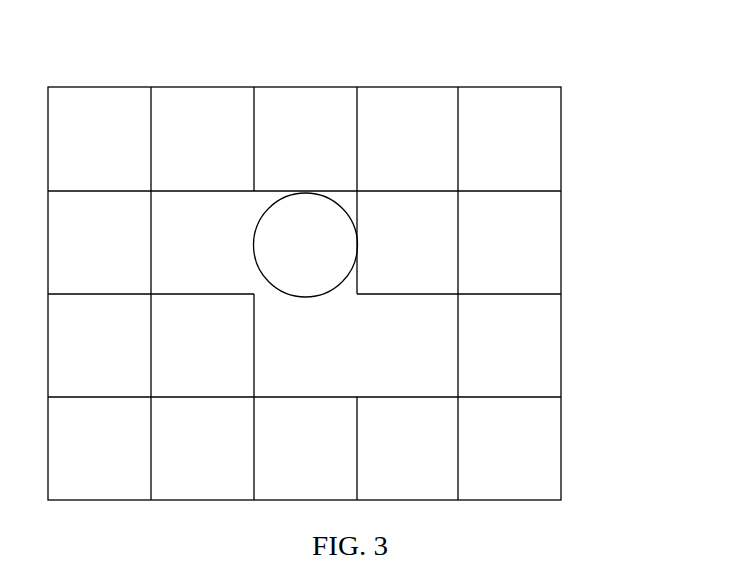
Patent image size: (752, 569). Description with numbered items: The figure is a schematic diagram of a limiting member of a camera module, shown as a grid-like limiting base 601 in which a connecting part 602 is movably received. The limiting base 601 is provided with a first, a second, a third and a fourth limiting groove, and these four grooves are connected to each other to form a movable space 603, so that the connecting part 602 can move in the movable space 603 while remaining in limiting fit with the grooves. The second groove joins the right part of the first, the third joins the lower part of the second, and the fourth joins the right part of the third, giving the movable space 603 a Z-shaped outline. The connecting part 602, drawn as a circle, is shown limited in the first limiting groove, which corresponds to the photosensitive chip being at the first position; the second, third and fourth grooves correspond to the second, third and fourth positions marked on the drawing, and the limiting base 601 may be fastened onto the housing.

The limiting base 601 is at (109, 151).
The connecting part 602 is at (312, 215).
The movable space 603 is at (364, 292).